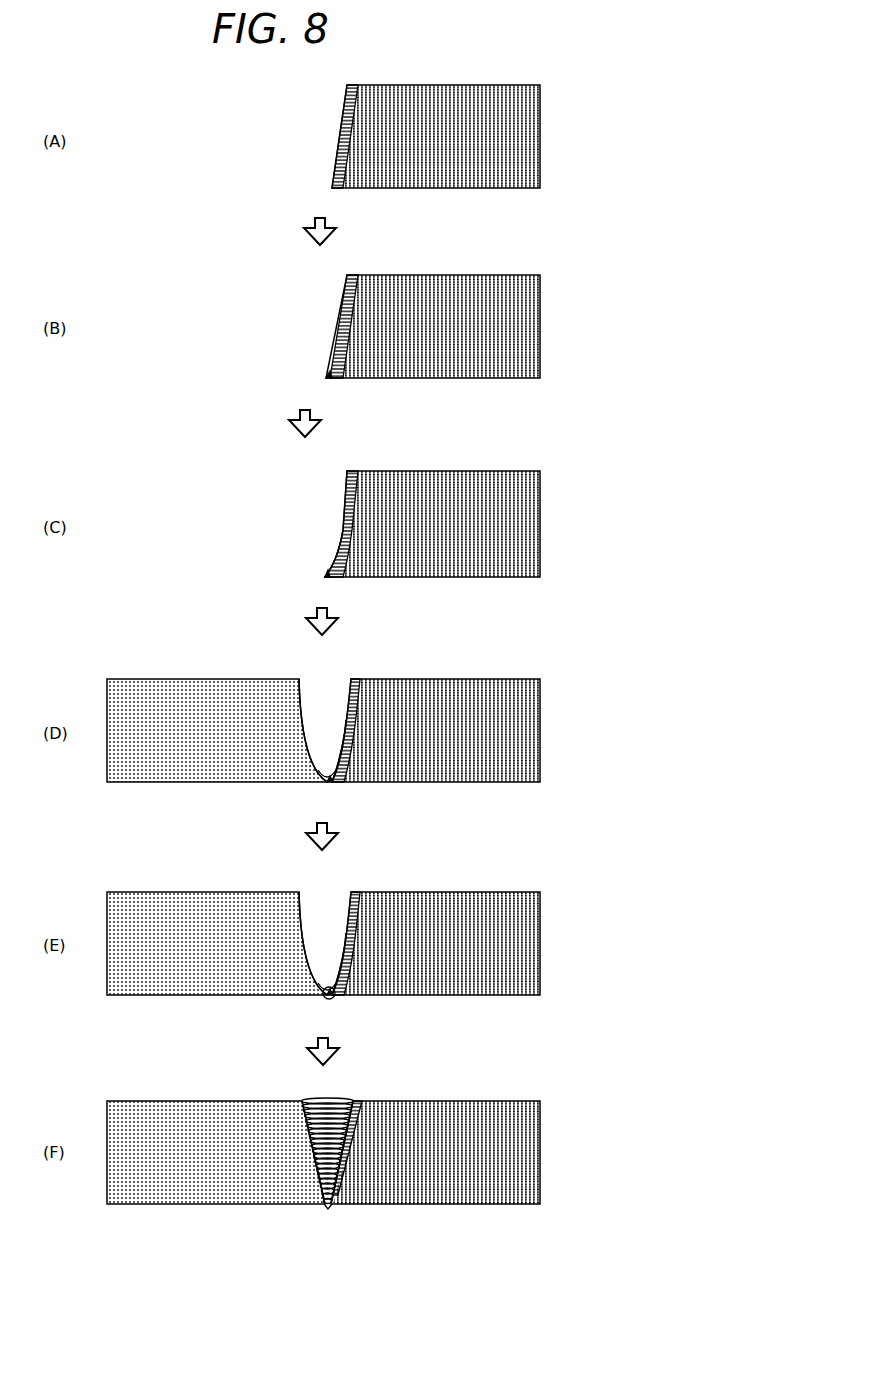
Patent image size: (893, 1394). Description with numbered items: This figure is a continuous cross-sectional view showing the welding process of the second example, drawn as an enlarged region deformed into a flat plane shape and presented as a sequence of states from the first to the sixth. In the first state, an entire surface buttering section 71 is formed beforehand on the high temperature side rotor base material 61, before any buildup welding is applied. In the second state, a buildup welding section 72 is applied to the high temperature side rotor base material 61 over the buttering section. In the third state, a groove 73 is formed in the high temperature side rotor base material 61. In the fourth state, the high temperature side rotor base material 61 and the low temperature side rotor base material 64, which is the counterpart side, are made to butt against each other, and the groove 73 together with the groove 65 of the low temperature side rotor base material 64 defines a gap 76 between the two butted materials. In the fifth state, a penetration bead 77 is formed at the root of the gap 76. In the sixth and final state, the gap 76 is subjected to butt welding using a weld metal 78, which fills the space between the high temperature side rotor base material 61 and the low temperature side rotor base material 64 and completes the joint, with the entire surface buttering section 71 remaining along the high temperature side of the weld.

The high temperature side rotor base material 61 is at (449, 88).
The low temperature side rotor base material 64 is at (205, 685).
The groove 65 is at (302, 710).
The entire surface buttering section 71 is at (331, 178).
The buildup welding section 72 is at (328, 374).
The groove 73 is at (341, 533).
The gap 76 is at (320, 740).
The penetration bead 77 is at (324, 998).
The weld metal 78 is at (325, 1115).